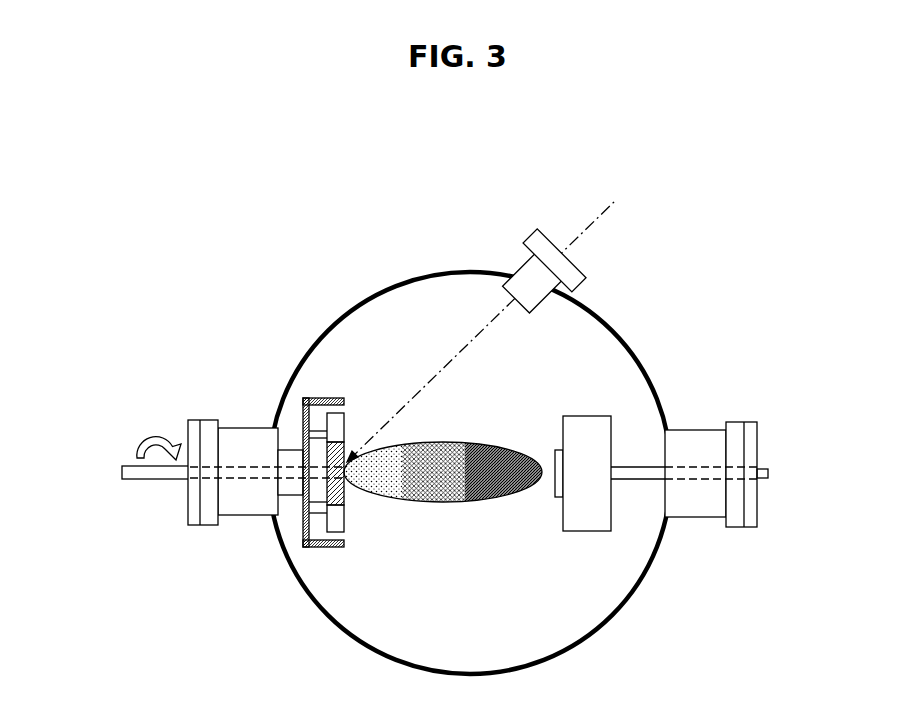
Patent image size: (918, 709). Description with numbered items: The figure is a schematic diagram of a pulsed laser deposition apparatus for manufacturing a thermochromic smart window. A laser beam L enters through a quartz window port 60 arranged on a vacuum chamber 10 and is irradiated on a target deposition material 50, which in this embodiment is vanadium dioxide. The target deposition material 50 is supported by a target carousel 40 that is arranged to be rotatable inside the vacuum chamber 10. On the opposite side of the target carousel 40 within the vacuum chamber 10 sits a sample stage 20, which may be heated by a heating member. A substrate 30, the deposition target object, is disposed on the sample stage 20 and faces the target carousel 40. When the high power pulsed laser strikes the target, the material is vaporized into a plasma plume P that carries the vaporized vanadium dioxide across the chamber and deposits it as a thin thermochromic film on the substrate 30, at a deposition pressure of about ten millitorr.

The vacuum chamber 10 is at (621, 333).
The sample stage 20 is at (585, 422).
The substrate 30 is at (556, 456).
The target carousel 40 is at (322, 398).
The target deposition material 50 is at (344, 491).
The quartz window port 60 is at (528, 234).
The plasma plume P is at (447, 442).
The laser beam L is at (593, 222).